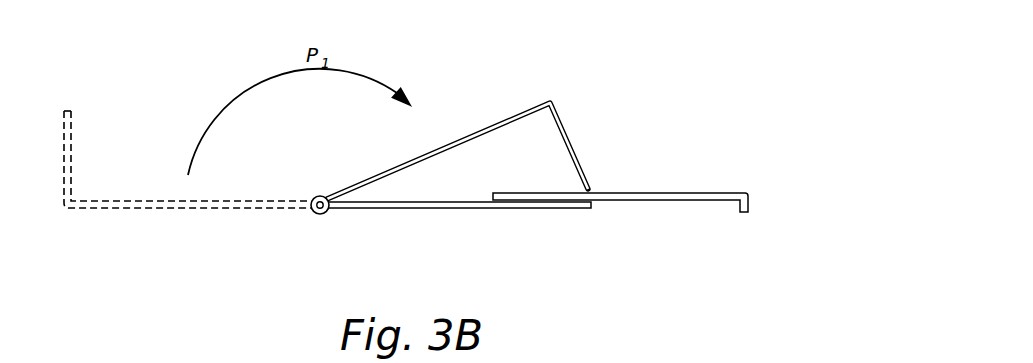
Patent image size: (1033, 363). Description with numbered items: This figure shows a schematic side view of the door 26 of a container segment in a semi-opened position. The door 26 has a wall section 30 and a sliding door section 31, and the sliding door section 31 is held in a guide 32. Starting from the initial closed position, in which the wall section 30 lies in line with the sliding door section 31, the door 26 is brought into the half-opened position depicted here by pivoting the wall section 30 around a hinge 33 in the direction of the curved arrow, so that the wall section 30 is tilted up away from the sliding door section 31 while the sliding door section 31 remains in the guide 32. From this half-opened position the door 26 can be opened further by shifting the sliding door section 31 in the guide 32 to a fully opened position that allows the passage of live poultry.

The door 26 is at (734, 74).
The wall section 30 is at (541, 100).
The sliding door section 31 is at (460, 207).
The guide 32 is at (648, 193).
The hinge 33 is at (322, 216).